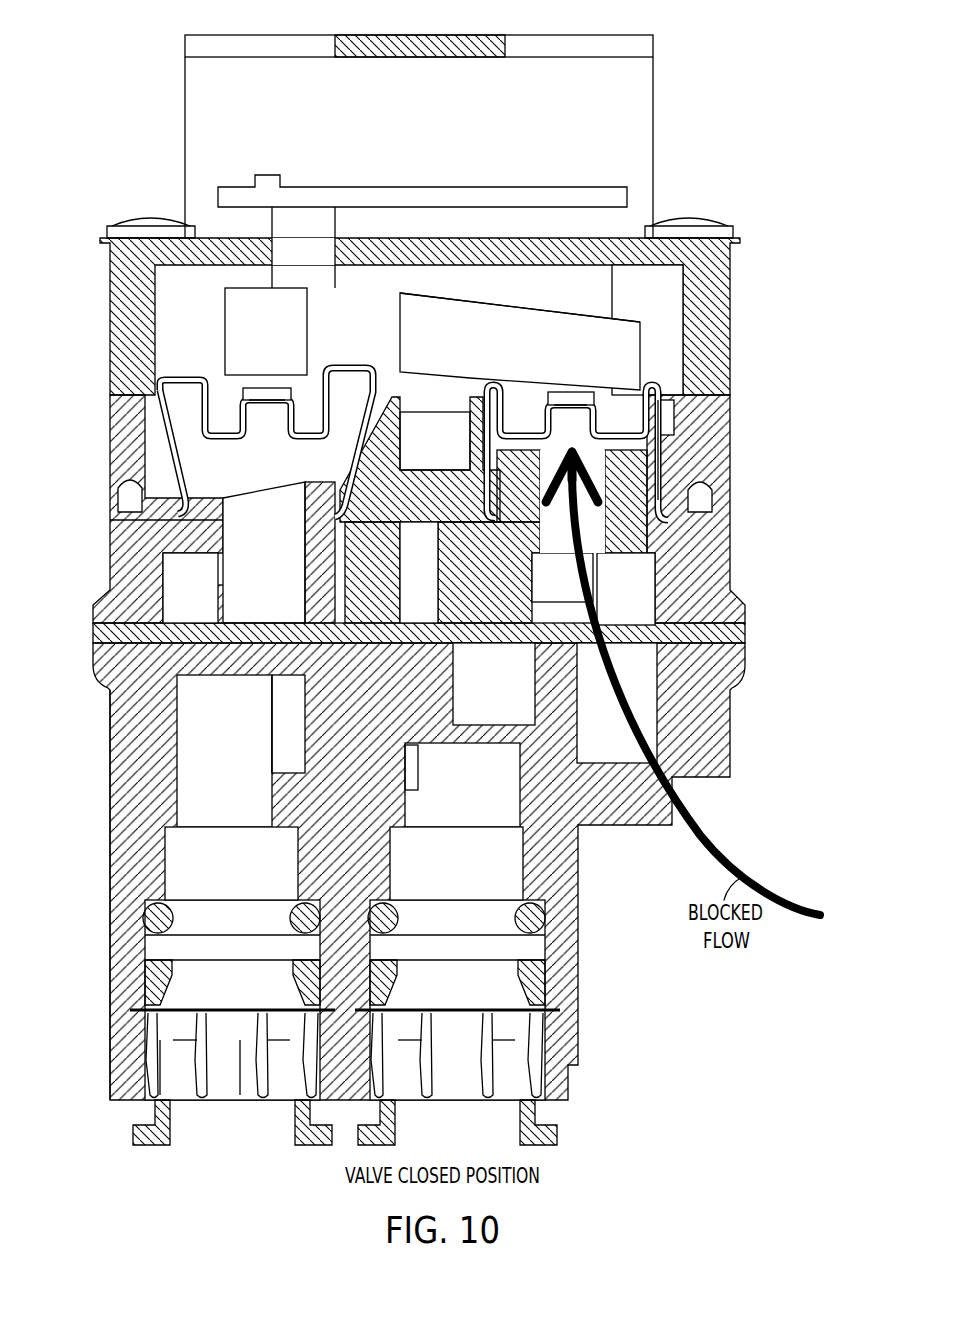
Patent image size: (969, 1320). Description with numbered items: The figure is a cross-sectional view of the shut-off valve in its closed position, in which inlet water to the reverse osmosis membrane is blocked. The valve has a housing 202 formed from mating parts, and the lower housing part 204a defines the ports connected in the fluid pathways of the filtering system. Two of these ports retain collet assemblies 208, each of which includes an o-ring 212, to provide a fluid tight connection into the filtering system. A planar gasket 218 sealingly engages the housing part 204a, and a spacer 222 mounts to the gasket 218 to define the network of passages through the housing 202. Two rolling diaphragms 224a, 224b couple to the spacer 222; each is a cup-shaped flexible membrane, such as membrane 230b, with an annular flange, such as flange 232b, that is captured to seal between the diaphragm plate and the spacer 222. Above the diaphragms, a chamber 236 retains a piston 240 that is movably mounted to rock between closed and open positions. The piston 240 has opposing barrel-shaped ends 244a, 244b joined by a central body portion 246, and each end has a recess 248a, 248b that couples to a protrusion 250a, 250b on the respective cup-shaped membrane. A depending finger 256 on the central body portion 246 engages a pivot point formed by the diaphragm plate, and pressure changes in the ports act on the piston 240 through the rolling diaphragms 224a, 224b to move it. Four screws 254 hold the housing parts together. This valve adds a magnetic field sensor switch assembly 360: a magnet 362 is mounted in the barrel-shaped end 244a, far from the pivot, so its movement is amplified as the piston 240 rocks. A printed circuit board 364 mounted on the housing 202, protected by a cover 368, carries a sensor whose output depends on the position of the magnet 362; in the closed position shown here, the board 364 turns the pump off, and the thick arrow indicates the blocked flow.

The cover 368 is at (190, 49).
The printed circuit board 364 is at (453, 197).
The magnetic field sensor switch assembly 360 is at (215, 218).
The magnet 362 is at (224, 312).
The screws 254 is at (145, 223).
The central body portion 246 is at (440, 268).
The piston 240 is at (515, 268).
The chamber 236 is at (580, 280).
The depending finger 256 is at (437, 407).
The recess 248a is at (256, 385).
The recess 248b is at (580, 395).
The barrel-shaped end 244a is at (225, 422).
The barrel-shaped end 244b is at (622, 417).
The protrusion 250a is at (272, 402).
The protrusion 250b is at (548, 400).
The cup-shaped flexible membrane 230b is at (650, 410).
The rolling diaphragm 224a is at (145, 482).
The rolling diaphragm 224b is at (690, 437).
The annular flange 232b is at (696, 488).
The spacer 222 is at (107, 612).
The planar gasket 218 is at (733, 640).
The housing part 204a is at (108, 747).
The housing 202 is at (125, 837).
The o-ring 212 is at (153, 920).
The collet assemblies 208 is at (133, 1133).